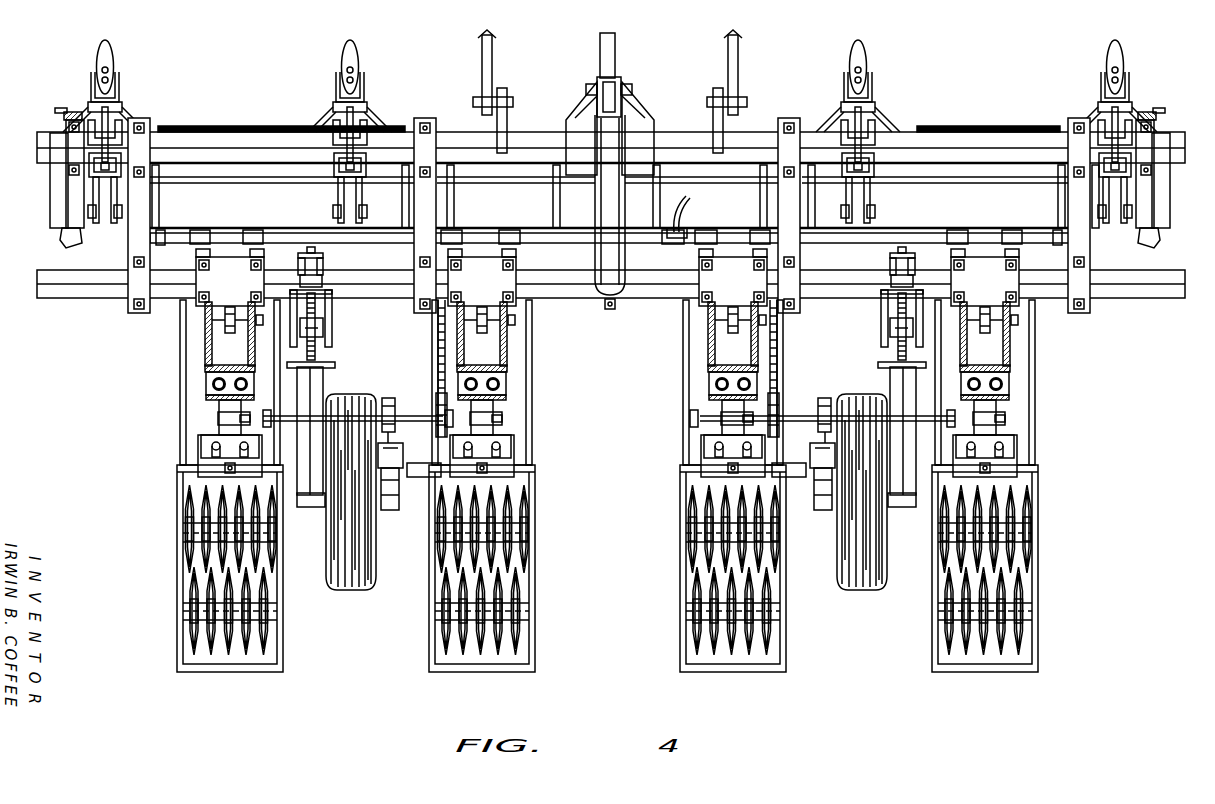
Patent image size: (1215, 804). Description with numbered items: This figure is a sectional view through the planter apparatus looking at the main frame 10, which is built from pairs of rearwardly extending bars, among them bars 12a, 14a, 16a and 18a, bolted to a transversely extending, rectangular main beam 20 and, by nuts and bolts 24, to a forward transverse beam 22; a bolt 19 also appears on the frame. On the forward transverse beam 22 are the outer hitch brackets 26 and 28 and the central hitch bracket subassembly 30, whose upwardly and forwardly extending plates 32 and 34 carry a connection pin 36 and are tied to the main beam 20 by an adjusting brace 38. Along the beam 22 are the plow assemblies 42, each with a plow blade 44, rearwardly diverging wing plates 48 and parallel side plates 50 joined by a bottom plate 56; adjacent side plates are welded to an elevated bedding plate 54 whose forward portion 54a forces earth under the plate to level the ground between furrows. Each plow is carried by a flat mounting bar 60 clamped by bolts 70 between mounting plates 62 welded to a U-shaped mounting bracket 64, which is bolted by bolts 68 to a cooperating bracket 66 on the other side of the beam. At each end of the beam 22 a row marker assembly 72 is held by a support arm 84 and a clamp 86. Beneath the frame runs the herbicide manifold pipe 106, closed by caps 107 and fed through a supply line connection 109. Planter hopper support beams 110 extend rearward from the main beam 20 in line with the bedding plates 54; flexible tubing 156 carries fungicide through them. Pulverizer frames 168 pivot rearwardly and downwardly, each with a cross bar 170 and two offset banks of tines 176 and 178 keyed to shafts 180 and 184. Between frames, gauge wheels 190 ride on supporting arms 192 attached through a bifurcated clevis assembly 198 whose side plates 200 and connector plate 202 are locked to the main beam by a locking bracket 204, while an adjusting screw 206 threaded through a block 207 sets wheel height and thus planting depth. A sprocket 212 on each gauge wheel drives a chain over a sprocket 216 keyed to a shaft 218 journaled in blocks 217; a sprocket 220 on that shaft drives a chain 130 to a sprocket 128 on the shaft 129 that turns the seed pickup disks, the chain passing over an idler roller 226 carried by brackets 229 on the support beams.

The main frame 10 is at (565, 303).
The rearwardly extending bar 12a is at (128, 302).
The rearwardly extending bar 14a is at (422, 300).
The rearwardly extending bar 16a is at (800, 296).
The rearwardly extending bar 18a is at (1088, 300).
The bolt 19 is at (139, 314).
The main beam 20 is at (45, 292).
The forward transverse beam 22 is at (45, 148).
The nuts and bolts 24 is at (140, 126).
The outer hitch bracket 26 is at (508, 110).
The outer hitch bracket 28 is at (705, 110).
The central hitch bracket subassembly 30 is at (628, 80).
The plate 32 is at (642, 110).
The plate 34 is at (576, 110).
The connection pin 36 is at (590, 84).
The adjusting brace 38 is at (598, 194).
The plow assembly 42 is at (86, 86).
The plow blade 44 is at (106, 55).
The wing plates 48 is at (320, 128).
The side plates 50 is at (340, 195).
The bedding plate 54 is at (232, 200).
The upwardly and forwardly extending portion 54a is at (210, 126).
The bottom plate 56 is at (402, 207).
The mounting bar 60 is at (112, 185).
The mounting plates 62 is at (366, 192).
The U-shaped mounting bracket 64 is at (850, 176).
The cooperating U-shaped mounting bracket 66 is at (125, 112).
The bolts 68 is at (356, 140).
The bolts 70 is at (92, 220).
The row marker assembly 72 is at (60, 110).
The support arm 84 is at (60, 202).
The clamp 86 is at (75, 138).
The herbicide manifold pipe 106 is at (540, 243).
The caps 107 is at (162, 230).
The supply line connection 109 is at (684, 206).
The planter hopper support beam 110 is at (246, 292).
The sprocket 128 is at (226, 334).
The shaft 129 is at (514, 320).
The chain 130 is at (438, 356).
The flexible tubing 156 is at (208, 388).
The pulverizer frame 168 is at (190, 674).
The cross bar 170 is at (182, 470).
The pulverizer tines 176 is at (522, 500).
The pulverizer tines 178 is at (522, 646).
The shaft 180 is at (192, 535).
The shaft 184 is at (192, 613).
The gauge wheel 190 is at (346, 590).
The gauge wheel supporting arm 192 is at (311, 507).
The bifurcated clevis assembly 198 is at (330, 340).
The side plates 200 is at (332, 312).
The connector plate 202 is at (322, 272).
The locking bracket 204 is at (300, 252).
The adjusting screw 206 is at (884, 348).
The block 207 is at (336, 326).
The sprocket 212 is at (390, 512).
The sprocket 216 is at (388, 398).
The journal blocks 217 is at (500, 418).
The shaft 218 is at (216, 420).
The sprocket 220 is at (300, 398).
The idler roller 226 is at (400, 452).
The brackets 229 is at (418, 478).